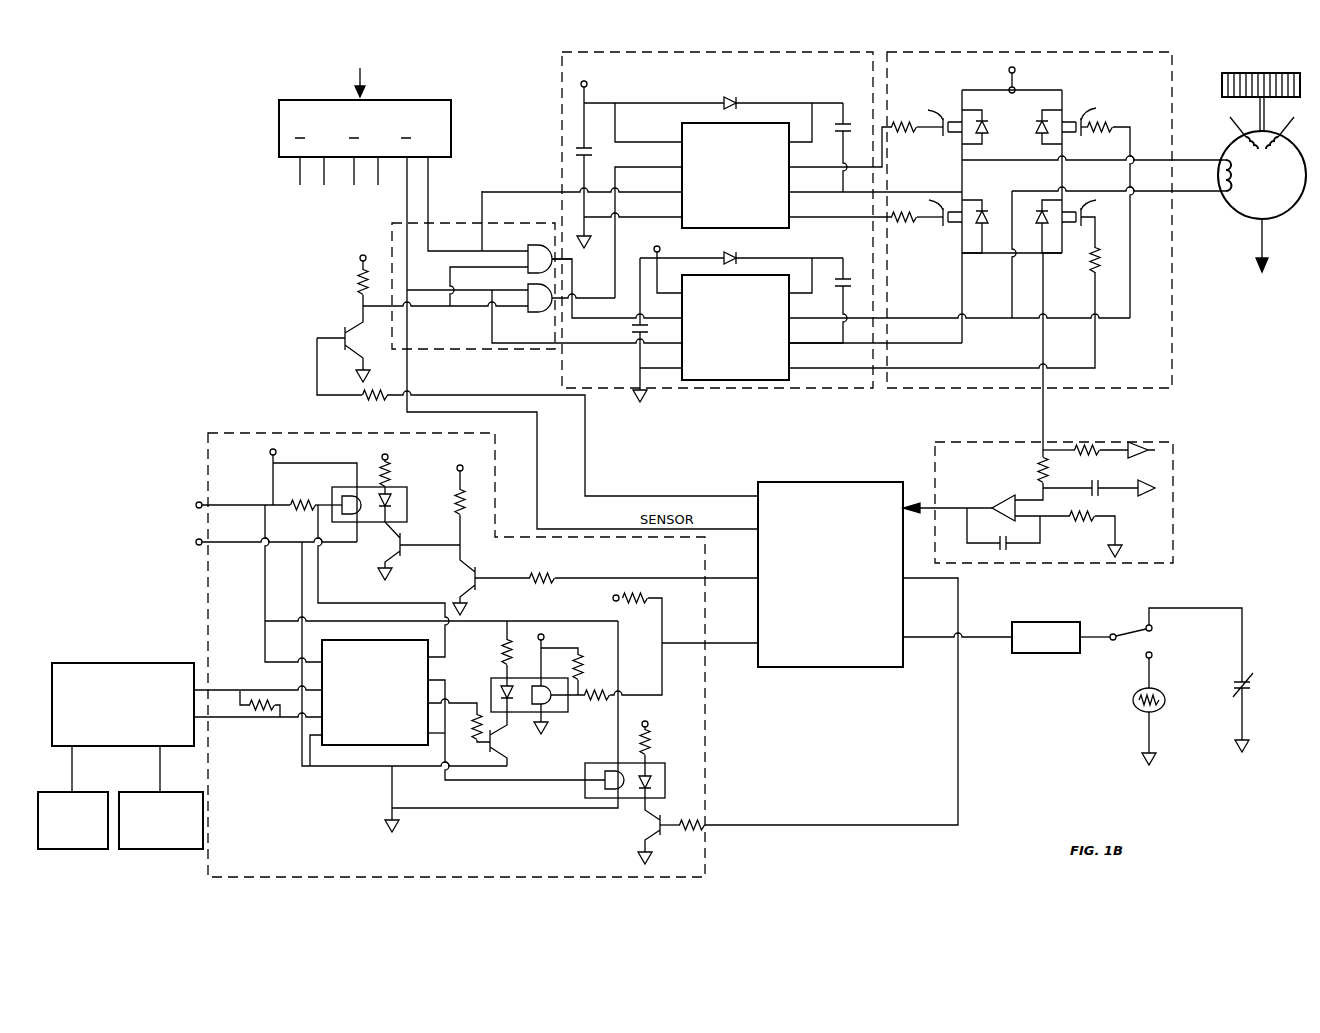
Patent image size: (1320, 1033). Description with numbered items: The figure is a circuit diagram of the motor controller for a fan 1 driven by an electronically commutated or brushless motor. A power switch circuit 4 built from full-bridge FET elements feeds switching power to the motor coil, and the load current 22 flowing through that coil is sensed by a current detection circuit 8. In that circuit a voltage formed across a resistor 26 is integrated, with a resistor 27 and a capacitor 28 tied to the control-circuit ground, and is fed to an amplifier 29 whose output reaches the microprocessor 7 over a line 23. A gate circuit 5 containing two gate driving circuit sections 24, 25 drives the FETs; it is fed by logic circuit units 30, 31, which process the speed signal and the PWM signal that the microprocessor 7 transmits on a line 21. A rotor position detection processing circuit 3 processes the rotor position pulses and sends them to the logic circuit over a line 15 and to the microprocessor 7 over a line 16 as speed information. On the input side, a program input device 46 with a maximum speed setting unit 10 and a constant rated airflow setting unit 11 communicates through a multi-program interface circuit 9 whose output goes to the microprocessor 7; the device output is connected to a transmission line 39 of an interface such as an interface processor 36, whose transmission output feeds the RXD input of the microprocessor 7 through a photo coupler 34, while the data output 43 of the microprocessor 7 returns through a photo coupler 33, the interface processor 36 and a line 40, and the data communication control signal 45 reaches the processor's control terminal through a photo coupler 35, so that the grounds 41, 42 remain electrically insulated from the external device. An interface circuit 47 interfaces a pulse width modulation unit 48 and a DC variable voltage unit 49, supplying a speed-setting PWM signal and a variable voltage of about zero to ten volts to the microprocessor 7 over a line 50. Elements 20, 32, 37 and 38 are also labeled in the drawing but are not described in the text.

The fan 1 is at (1266, 73).
The rotor position detection processing circuit 3 is at (451, 118).
The power switch circuit 4 is at (1175, 78).
The gate circuit 5 is at (562, 92).
The microprocessor 7 is at (840, 482).
The current detection circuit 8 is at (445, 223).
The multi-program interface circuit 9 is at (243, 430).
The maximum speed setting unit 10 is at (62, 849).
The airflow rate setting unit 11 is at (150, 849).
The line 15 is at (482, 198).
The line 16 is at (405, 213).
The sensor signal output line 20 is at (1266, 242).
The line 21 is at (587, 433).
The load current 22 is at (1045, 343).
The line 23 is at (950, 509).
The gate driving circuit section 24 is at (760, 123).
The gate driving circuit section 25 is at (757, 275).
The resistor 26 is at (1088, 456).
The resistor 27 is at (1040, 468).
The capacitor 28 is at (1108, 494).
The amplifier 29 is at (1006, 500).
The logic circuit unit 30 is at (540, 312).
The logic circuit unit 31 is at (540, 245).
The transistor 32 is at (345, 330).
The photo coupler 33 is at (400, 487).
The photo coupler 34 is at (517, 714).
The photo coupler 35 is at (657, 763).
The interface processor 36 is at (382, 745).
The transistor 37 is at (415, 604).
The signal line 38 is at (505, 781).
The transmission line 39 is at (268, 690).
The line 40 is at (270, 722).
The ground 41 is at (392, 812).
The ground 42 is at (655, 842).
The data output 43 is at (668, 578).
The data communication control signal 45 is at (956, 680).
The program input device 46 is at (108, 663).
The interface circuit 47 is at (1060, 622).
The pulse width modulation unit 48 is at (1136, 710).
The DC variable voltage unit 49 is at (1236, 688).
The line 50 is at (973, 640).